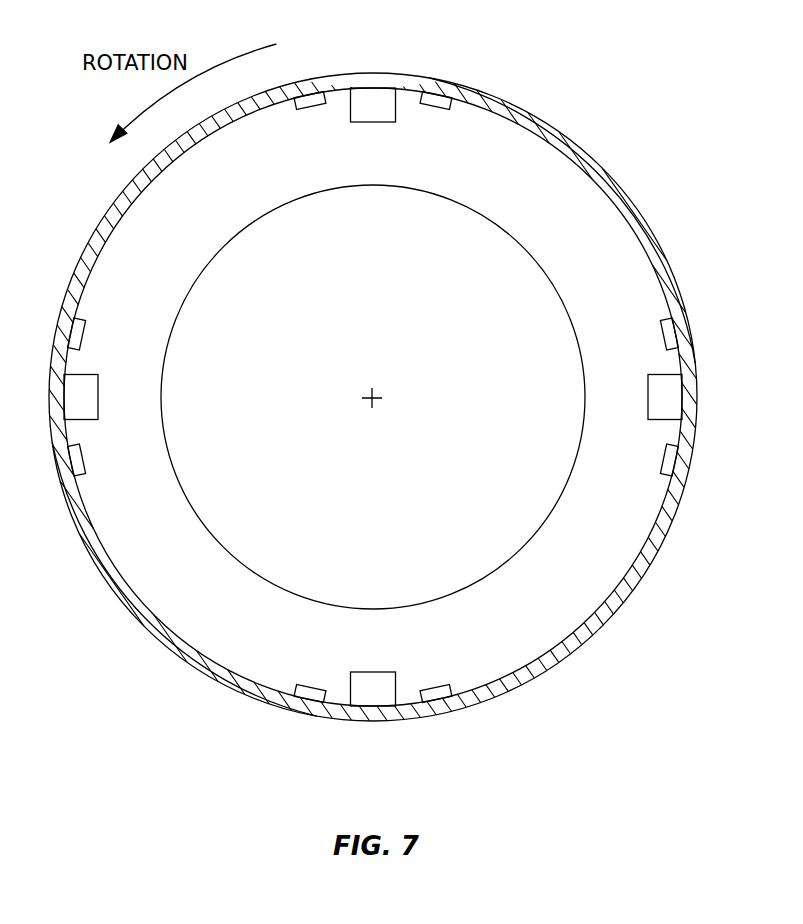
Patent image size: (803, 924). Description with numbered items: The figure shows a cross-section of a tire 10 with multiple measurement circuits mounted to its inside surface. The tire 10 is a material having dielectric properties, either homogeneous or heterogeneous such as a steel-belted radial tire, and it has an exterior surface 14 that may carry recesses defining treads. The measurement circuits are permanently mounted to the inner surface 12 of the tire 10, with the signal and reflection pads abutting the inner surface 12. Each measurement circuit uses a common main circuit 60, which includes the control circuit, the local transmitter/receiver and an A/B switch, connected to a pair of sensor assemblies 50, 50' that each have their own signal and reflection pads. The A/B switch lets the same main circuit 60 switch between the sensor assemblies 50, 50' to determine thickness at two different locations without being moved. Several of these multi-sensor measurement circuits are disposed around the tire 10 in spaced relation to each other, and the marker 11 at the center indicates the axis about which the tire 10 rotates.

The tire 10 is at (567, 151).
The center axis 11 is at (384, 395).
The inner surface 12 is at (552, 144).
The exterior surface 14 is at (468, 84).
The sensor assembly 50 is at (373, 397).
The sensor assembly 50' is at (373, 397).
The main circuit 60 is at (377, 124).